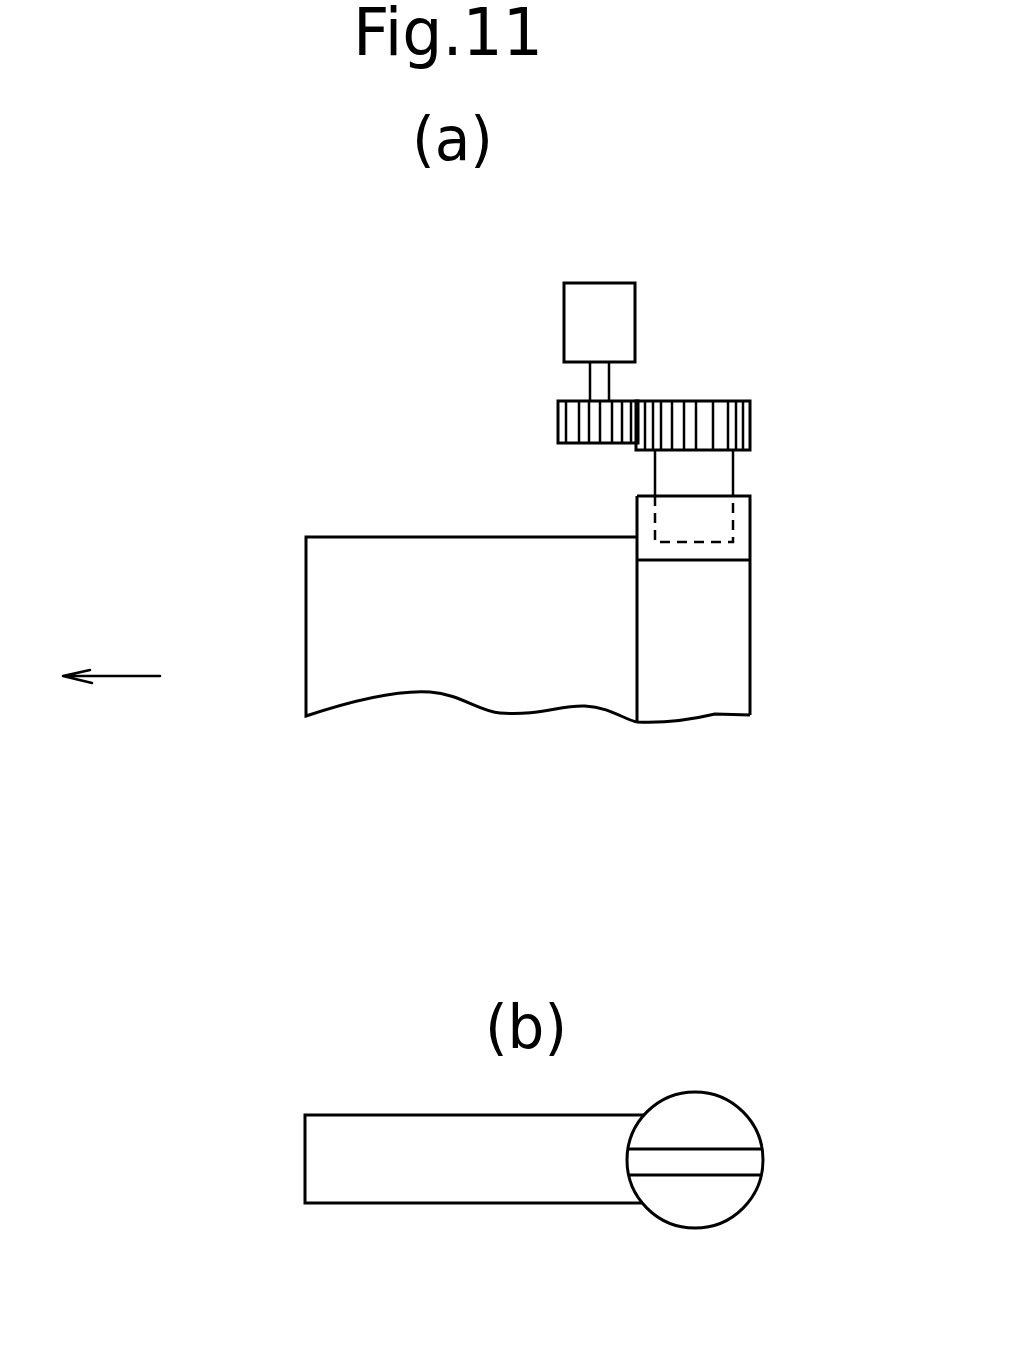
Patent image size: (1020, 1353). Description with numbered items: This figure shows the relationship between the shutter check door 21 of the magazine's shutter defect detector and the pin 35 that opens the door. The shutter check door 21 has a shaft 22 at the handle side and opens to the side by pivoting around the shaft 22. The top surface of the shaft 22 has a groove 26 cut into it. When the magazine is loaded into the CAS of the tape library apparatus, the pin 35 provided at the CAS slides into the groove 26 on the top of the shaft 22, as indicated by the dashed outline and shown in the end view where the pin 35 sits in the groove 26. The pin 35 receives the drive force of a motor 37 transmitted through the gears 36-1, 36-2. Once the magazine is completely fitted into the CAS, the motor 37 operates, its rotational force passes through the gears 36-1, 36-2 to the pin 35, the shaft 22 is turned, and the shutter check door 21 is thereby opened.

The motor 37 is at (608, 283).
The gear 36-1 is at (597, 443).
The gear 36-2 is at (680, 401).
The pin 35 is at (712, 473).
The groove 26 is at (740, 527).
The shaft 22 is at (712, 620).
The shutter check door 21 is at (333, 583).